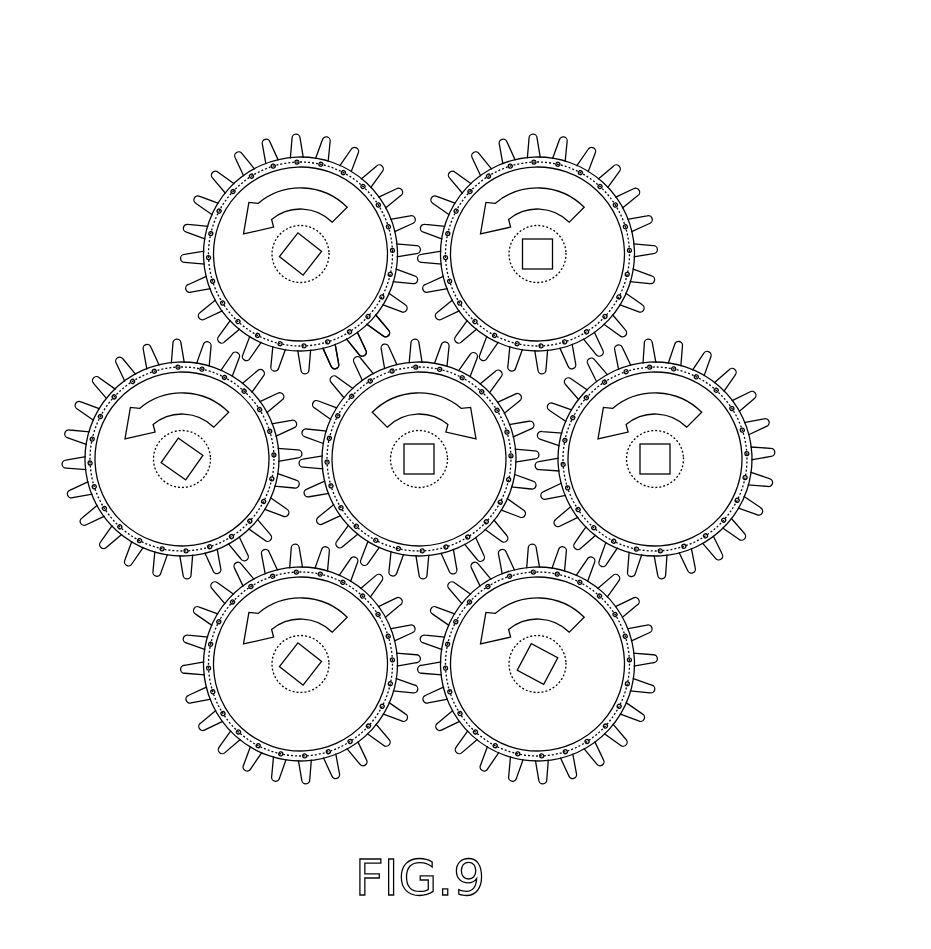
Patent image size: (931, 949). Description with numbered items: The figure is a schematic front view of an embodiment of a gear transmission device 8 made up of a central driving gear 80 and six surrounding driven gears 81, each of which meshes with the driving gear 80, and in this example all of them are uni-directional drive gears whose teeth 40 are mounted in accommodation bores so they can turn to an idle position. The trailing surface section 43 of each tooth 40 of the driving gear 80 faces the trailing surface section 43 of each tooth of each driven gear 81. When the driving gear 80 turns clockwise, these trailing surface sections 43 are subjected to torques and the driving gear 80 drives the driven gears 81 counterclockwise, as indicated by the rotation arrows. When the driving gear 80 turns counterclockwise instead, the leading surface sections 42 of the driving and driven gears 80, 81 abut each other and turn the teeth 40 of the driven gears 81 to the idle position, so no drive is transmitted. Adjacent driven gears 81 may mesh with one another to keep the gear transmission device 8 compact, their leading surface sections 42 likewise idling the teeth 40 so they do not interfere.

The gear transmission device 8 is at (583, 130).
The driving gear 80 is at (410, 337).
The driven gear 81 is at (617, 165).
The tooth 40 is at (361, 350).
The leading surface section 42 is at (372, 337).
The trailing surface section 43 is at (355, 352).